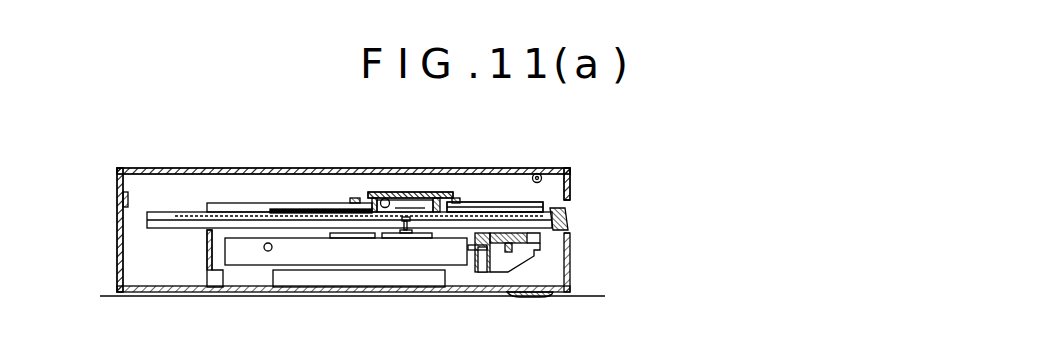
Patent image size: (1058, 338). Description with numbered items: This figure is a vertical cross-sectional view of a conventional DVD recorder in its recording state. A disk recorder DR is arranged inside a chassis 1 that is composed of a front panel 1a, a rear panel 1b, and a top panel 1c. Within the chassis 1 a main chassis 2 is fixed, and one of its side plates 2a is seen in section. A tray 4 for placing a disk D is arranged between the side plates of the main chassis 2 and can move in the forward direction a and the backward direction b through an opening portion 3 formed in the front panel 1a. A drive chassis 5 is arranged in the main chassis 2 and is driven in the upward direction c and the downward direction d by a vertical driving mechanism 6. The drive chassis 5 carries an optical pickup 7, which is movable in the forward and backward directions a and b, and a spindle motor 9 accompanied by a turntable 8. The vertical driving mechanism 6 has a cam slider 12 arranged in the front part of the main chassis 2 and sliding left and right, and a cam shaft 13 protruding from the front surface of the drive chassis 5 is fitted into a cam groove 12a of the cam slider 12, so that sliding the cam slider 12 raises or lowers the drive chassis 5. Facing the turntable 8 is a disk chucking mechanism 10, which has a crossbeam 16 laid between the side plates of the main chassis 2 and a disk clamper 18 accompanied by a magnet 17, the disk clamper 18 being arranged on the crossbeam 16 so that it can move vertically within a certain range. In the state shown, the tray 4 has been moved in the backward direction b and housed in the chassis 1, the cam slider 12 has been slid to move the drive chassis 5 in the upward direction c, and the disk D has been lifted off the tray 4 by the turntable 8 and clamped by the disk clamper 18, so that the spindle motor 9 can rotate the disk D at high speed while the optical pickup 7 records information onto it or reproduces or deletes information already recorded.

The chassis 1 is at (116, 183).
The front panel 1a is at (569, 177).
The rear panel 1b is at (117, 258).
The top panel 1c is at (310, 168).
The main chassis 2 is at (205, 238).
The side plate 2a is at (233, 204).
The opening portion 3 is at (568, 203).
The tray 4 is at (568, 228).
The drive chassis 5 is at (248, 260).
The vertical driving mechanism 6 is at (528, 269).
The optical pickup 7 is at (353, 238).
The turntable 8 is at (385, 214).
The spindle motor 9 is at (425, 233).
The disk chucking mechanism 10 is at (412, 188).
The cam slider 12 is at (473, 262).
The cam groove 12a is at (493, 252).
The cam shaft 13 is at (466, 246).
The crossbeam 16 is at (458, 200).
The magnet 17 is at (385, 198).
The disk clamper 18 is at (426, 192).
The disk D is at (515, 205).
The disk recorder DR is at (179, 201).
The forward direction a is at (691, 221).
The backward direction b is at (688, 221).
The upward direction c is at (290, 279).
The downward direction d is at (288, 281).